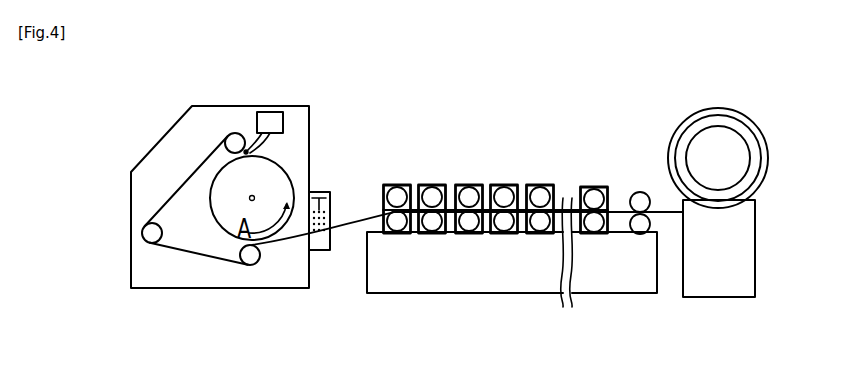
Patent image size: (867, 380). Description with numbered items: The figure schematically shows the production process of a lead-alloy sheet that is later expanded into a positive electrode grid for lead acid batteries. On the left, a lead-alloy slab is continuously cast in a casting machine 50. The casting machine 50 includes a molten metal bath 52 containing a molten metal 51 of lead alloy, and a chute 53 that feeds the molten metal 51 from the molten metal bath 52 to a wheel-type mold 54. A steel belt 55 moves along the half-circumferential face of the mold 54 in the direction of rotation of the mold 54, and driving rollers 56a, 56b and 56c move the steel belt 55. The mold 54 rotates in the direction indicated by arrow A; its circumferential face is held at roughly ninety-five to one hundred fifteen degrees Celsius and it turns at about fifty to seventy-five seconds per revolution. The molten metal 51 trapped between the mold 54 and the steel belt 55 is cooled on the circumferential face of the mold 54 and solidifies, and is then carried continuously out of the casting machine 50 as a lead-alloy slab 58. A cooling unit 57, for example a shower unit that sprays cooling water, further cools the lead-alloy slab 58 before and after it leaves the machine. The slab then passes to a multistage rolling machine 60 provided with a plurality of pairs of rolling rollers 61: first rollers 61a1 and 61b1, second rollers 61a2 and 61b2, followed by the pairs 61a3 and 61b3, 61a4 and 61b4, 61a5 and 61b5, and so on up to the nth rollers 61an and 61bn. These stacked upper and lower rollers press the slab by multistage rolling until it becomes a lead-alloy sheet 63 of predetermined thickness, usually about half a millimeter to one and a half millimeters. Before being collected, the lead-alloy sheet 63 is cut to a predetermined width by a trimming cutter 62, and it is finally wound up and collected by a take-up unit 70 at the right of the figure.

The casting machine 50 is at (266, 90).
The molten metal 51 is at (249, 152).
The molten metal bath 52 is at (272, 124).
The chute 53 is at (296, 145).
The wheel-type mold 54 is at (215, 177).
The steel belt 55 is at (172, 195).
The driving roller 56a is at (232, 142).
The driving roller 56b is at (150, 234).
The driving roller 56c is at (249, 257).
The cooling unit 57 is at (318, 252).
The lead-alloy slab 58 is at (338, 226).
The multistage rolling machine 60 is at (569, 93).
The rolling rollers 61 is at (617, 127).
The first roller 61a1 is at (397, 197).
The second roller 61a2 is at (432, 197).
The third roller 61a3 is at (469, 197).
The fourth roller 61a4 is at (504, 197).
The fifth roller 61a5 is at (540, 197).
The nth roller 61an is at (594, 199).
The first roller 61b1 is at (395, 222).
The second roller 61b2 is at (432, 222).
The third roller 61b3 is at (469, 222).
The fourth roller 61b4 is at (504, 222).
The fifth roller 61b5 is at (540, 222).
The nth roller 61bn is at (594, 224).
The trimming cutter 62 is at (640, 201).
The lead-alloy sheet 63 is at (670, 212).
The take-up unit 70 is at (760, 264).